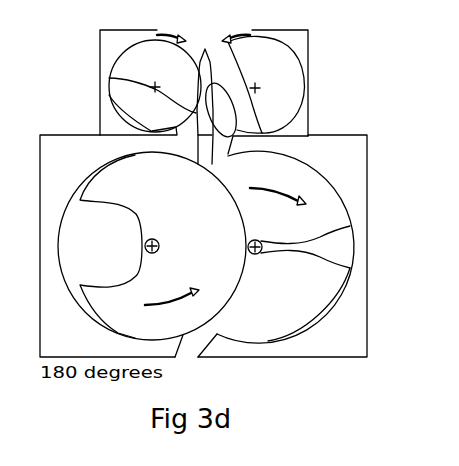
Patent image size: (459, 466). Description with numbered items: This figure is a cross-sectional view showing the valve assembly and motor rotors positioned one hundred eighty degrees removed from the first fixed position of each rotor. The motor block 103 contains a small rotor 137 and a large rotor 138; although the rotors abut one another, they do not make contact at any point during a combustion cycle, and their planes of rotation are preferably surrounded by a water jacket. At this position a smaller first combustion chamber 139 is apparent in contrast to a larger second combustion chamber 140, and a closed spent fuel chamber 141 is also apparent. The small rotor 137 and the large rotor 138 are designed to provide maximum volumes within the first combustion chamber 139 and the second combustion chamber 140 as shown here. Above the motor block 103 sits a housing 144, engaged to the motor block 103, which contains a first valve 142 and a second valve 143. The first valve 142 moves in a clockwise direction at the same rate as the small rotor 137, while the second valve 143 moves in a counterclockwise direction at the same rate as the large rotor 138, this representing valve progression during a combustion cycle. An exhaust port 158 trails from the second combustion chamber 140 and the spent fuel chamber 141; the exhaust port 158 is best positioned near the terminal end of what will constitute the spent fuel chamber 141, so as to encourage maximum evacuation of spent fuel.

The motor block 103 is at (203, 242).
The small rotor 137 is at (305, 247).
The large rotor 138 is at (152, 246).
The first combustion chamber 139 is at (111, 246).
The second combustion chamber 140 is at (285, 247).
The spent fuel chamber 141 is at (309, 304).
The first valve 142 is at (155, 83).
The second valve 143 is at (252, 88).
The housing 144 is at (297, 47).
The exhaust port 158 is at (188, 345).